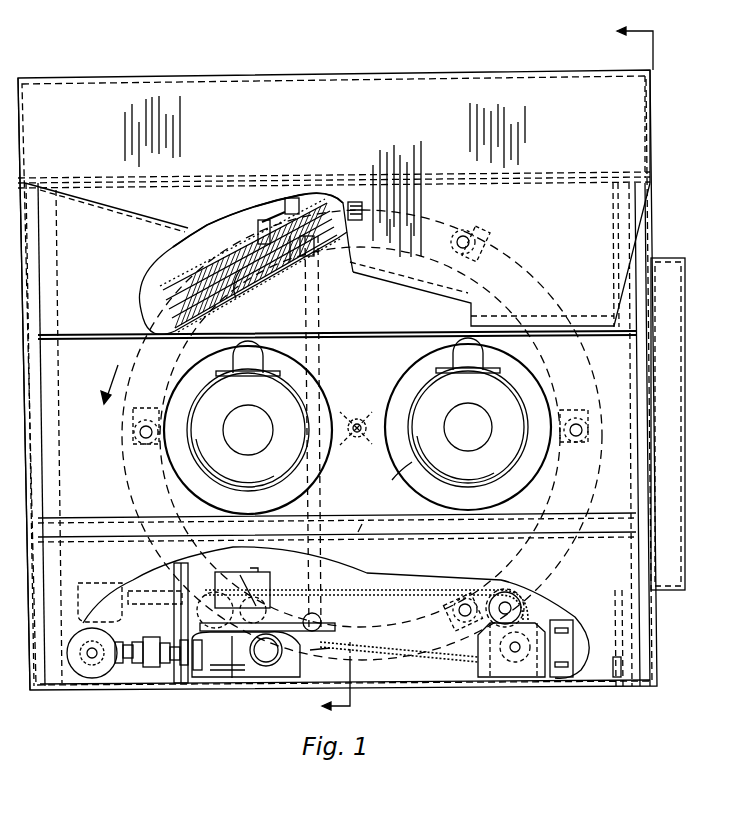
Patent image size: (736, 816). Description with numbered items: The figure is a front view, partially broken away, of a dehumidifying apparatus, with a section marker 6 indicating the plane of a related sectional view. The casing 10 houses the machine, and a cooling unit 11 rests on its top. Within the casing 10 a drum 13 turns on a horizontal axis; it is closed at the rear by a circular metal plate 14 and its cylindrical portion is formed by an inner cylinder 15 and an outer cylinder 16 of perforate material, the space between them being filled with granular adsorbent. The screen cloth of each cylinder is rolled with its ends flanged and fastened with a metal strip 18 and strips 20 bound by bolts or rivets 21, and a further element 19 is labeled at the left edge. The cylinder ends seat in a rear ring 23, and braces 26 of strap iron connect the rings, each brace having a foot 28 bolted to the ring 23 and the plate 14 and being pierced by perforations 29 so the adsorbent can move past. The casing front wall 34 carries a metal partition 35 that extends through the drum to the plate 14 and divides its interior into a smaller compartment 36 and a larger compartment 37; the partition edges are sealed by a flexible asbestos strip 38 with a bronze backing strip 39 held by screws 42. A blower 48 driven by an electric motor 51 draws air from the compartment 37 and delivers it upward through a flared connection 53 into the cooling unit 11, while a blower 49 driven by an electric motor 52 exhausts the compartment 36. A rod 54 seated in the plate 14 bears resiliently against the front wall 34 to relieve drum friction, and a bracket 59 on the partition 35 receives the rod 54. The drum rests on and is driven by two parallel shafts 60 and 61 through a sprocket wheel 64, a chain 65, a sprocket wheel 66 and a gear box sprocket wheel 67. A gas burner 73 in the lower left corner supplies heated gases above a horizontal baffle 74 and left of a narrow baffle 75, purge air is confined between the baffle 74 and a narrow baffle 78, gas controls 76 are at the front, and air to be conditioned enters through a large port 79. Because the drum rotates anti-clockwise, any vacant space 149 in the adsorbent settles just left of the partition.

The section line 6- 6 is at (480, 368).
The casing 10 is at (648, 548).
The cooling unit 11 is at (443, 82).
The drum 13 is at (180, 292).
The circular metal plate 14 is at (82, 573).
The inner cylinder 15 is at (212, 294).
The outer cylinder 16 is at (212, 257).
The metal strip 18 is at (118, 622).
The left side element 19 is at (6, 115).
The strips 20 is at (6, 88).
The bolts or rivets 21 is at (6, 145).
The rear ring 23 is at (9, 61).
The braces 26 is at (588, 492).
The foot 28 is at (6, 482).
The perforations 29 is at (262, 227).
The front wall 34 is at (38, 259).
The metal partition 35 is at (320, 317).
The compartment 36 is at (243, 292).
The compartment 37 is at (330, 250).
The flexible asbestos strip 38 is at (305, 270).
The backing strip 39 is at (264, 246).
The screws 42 is at (283, 282).
The blower 48 is at (392, 480).
The blower 49 is at (358, 532).
The electric motor 51 is at (488, 475).
The electric motor 52 is at (253, 482).
The flared connection 53 is at (608, 209).
The rod 54 is at (372, 412).
The bracket 59 is at (354, 410).
The shaft 60 is at (217, 607).
The shaft 61 is at (510, 609).
The sprocket wheel 64 is at (512, 604).
The chain 65 is at (413, 590).
The sprocket wheel 66 is at (204, 596).
The sprocket wheel 67 is at (519, 680).
The gas burner 73 is at (104, 588).
The horizontal baffle 74 is at (146, 587).
The narrow baffle 75 is at (292, 232).
The gas controls 76 is at (232, 638).
The narrow baffle 78 is at (318, 663).
The port 79 is at (690, 437).
The vacant space 149 is at (260, 222).